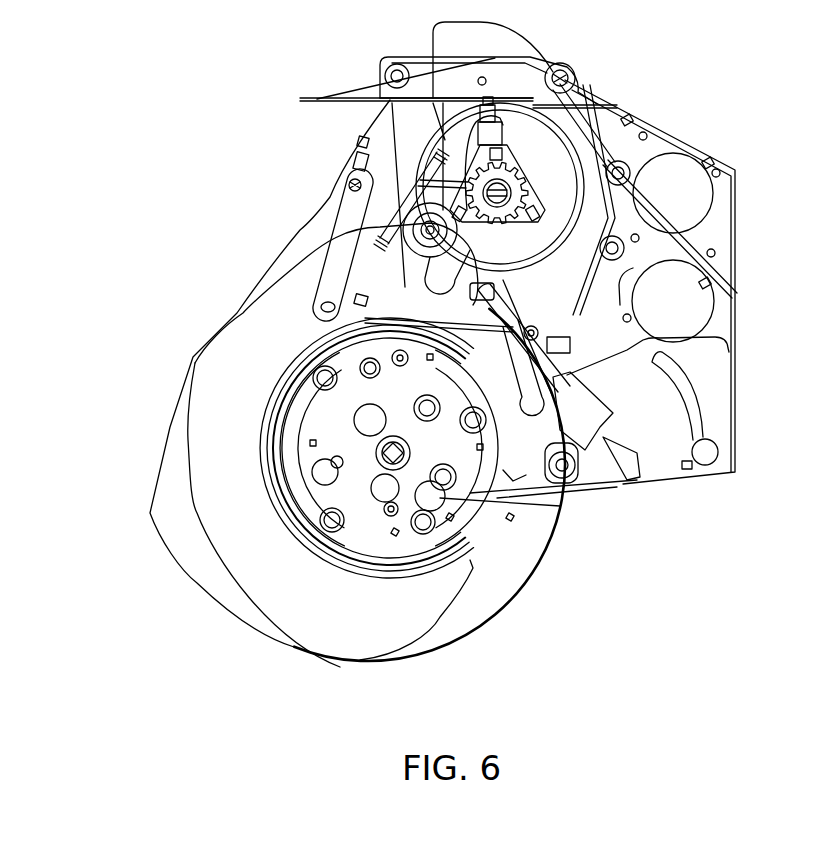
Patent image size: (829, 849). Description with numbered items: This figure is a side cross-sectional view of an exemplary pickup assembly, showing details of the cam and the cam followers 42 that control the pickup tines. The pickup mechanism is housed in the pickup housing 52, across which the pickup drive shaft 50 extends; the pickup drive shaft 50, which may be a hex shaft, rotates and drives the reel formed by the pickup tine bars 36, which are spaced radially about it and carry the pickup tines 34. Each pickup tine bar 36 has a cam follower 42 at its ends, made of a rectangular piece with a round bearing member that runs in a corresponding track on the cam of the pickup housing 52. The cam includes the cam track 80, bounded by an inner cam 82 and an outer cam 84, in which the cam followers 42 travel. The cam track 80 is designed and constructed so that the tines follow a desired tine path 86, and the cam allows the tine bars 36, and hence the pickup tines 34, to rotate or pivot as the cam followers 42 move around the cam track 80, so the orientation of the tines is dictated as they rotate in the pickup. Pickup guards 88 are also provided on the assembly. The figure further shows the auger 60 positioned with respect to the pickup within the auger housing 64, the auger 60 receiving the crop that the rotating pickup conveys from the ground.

The pickup tine 34 is at (430, 495).
The pickup tine bar 36 is at (427, 500).
The cam follower 42 is at (330, 525).
The pickup drive shaft 50 is at (393, 460).
The pickup housing 52 is at (480, 420).
The auger 60 is at (440, 152).
The auger housing 64 is at (556, 166).
The cam track 80 is at (302, 398).
The inner cam 82 is at (297, 434).
The outer cam 84 is at (277, 422).
The tine path 86 is at (197, 515).
The pickup guard 88 is at (306, 343).